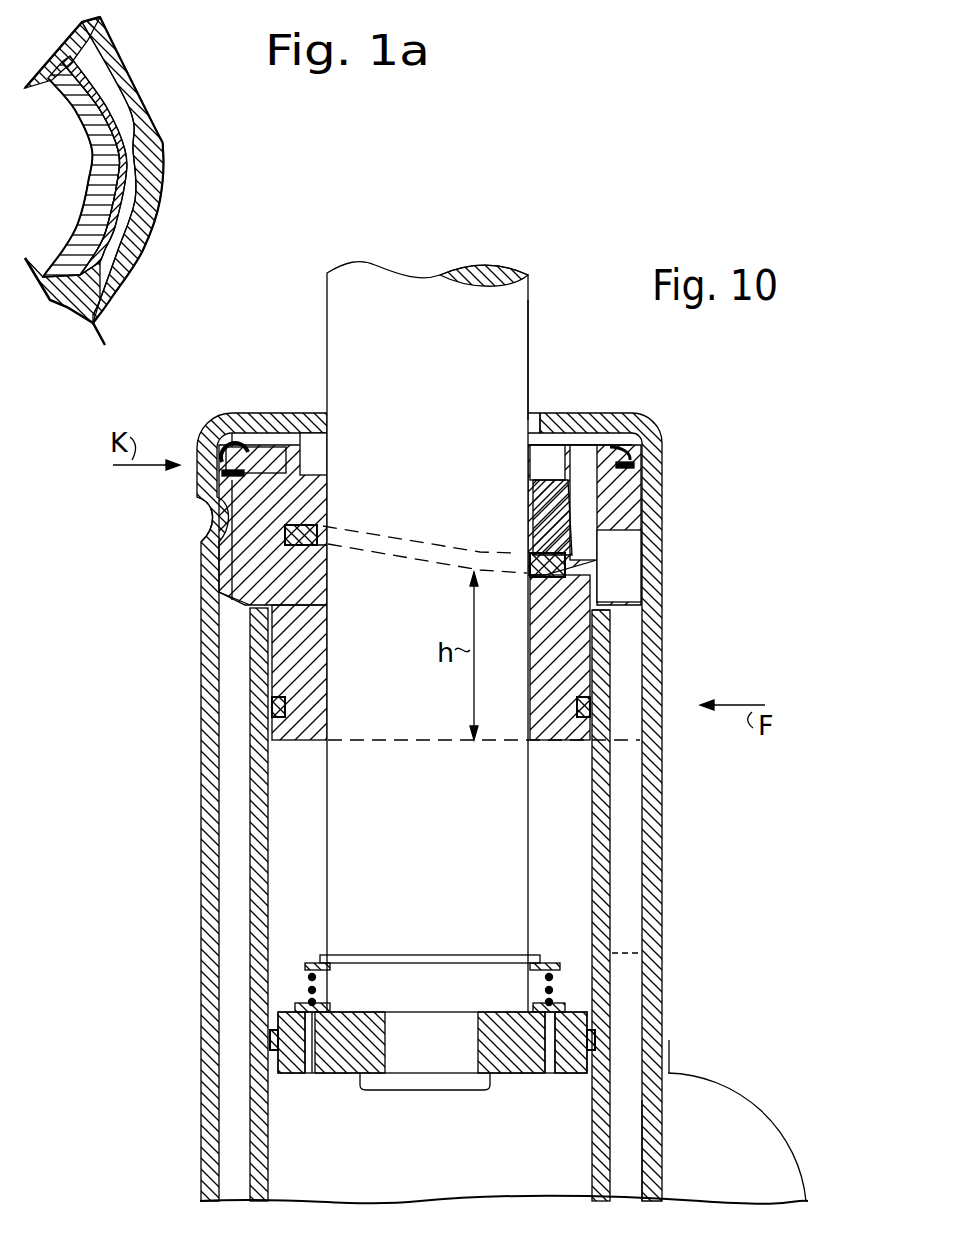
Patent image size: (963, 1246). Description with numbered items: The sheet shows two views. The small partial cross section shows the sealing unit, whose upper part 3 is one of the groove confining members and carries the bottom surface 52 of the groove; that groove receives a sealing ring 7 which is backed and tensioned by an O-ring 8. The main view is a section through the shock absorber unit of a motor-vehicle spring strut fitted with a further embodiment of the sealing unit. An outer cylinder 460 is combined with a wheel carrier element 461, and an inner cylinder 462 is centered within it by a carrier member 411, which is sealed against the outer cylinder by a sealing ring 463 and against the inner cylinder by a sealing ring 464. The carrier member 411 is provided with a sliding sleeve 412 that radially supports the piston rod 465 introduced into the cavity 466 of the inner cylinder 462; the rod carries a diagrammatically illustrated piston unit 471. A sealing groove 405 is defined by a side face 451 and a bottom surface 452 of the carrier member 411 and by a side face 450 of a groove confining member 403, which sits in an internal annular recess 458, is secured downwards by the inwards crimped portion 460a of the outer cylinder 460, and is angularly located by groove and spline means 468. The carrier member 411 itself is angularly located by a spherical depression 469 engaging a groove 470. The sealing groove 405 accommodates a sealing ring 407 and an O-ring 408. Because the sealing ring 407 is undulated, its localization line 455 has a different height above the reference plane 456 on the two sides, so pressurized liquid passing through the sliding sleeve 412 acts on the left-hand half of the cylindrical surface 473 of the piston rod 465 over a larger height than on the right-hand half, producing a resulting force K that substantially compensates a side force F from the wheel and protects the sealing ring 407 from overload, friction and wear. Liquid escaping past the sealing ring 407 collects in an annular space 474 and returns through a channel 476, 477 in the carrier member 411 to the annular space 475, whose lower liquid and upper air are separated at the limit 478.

In FIG. 1A, the upper part 3 is at (135, 92).
In FIG. 1A, the bottom surface 52 is at (130, 135).
In FIG. 1A, the O-ring 8 is at (128, 198).
In FIG. 1A, the sealing ring 7 is at (112, 277).
In FIG. 10, the cylindrical surface 473 is at (530, 332).
In FIG. 10, the piston rod 465 is at (512, 338).
In FIG. 10, the inwards crimped portion 460a is at (556, 420).
In FIG. 10, the annular space 474 is at (590, 432).
In FIG. 10, the sealing ring 463 is at (636, 440).
In FIG. 10, the channel 476 is at (598, 475).
In FIG. 10, the carrier member 411 is at (620, 495).
In FIG. 10, the side face 450 is at (548, 553).
In FIG. 10, the bottom surface 452 is at (560, 570).
In FIG. 10, the channel 477 is at (620, 580).
In FIG. 10, the sliding sleeve 412 is at (600, 665).
In FIG. 10, the sealing ring 464 is at (585, 705).
In FIG. 10, the inner cylinder 462 is at (600, 780).
In FIG. 10, the outer cylinder 460 is at (650, 830).
In FIG. 10, the cavity 466 is at (575, 890).
In FIG. 10, the annular space 475 is at (635, 992).
In FIG. 10, the wheel carrier element 461 is at (738, 1110).
In FIG. 10, the piston unit 471 is at (342, 1075).
In FIG. 10, the limit between liquid and air 478 is at (250, 953).
In FIG. 10, the side face 451 is at (282, 555).
In FIG. 10, the groove 470 is at (222, 578).
In FIG. 10, the sealing groove 405 is at (283, 540).
In FIG. 10, the spherical depression 469 is at (212, 522).
In FIG. 10, the groove confining member 403 is at (218, 445).
In FIG. 10, the groove and spline means 468 is at (258, 430).
In FIG. 10, the internal annular recess 458 is at (282, 430).
In FIG. 10, the O-ring 408 is at (302, 523).
In FIG. 10, the sealing ring 407 is at (305, 548).
In FIG. 10, the localization line 455 is at (382, 562).
In FIG. 10, the reference plane 456 is at (380, 744).